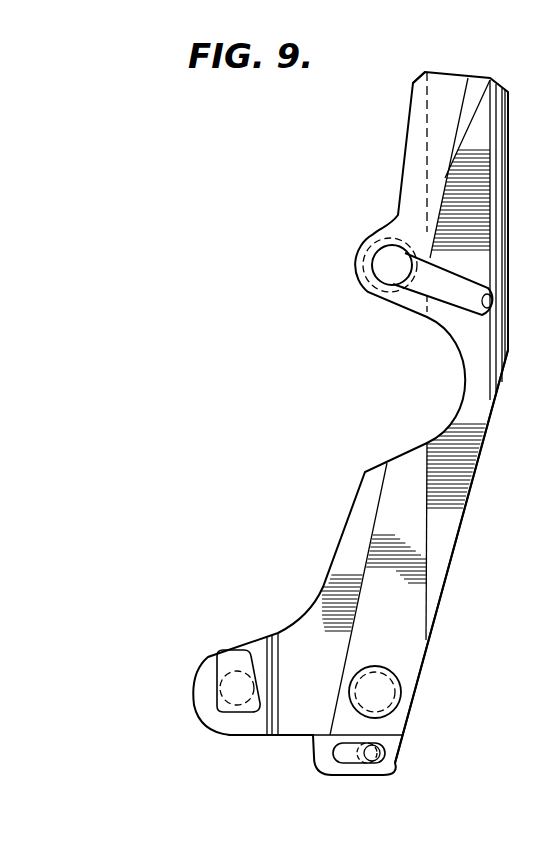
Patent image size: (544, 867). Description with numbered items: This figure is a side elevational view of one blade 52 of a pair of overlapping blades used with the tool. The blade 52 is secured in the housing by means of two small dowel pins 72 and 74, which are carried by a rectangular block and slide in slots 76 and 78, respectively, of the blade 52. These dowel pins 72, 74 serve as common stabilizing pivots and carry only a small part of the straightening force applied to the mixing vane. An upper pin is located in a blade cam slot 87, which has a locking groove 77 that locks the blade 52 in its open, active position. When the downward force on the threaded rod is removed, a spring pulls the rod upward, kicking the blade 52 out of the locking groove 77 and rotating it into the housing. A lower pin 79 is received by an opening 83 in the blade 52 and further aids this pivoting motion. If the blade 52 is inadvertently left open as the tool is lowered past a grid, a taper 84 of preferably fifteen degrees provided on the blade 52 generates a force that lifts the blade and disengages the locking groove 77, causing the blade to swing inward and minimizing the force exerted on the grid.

The blade 52 is at (477, 418).
The taper 84 is at (452, 563).
The locking groove 77 is at (382, 267).
The blade cam slot 87 is at (492, 301).
The slot 78 is at (228, 652).
The dowel pin 74 is at (224, 692).
The slot 76 is at (395, 708).
The dowel pin 72 is at (397, 687).
The opening 83 is at (337, 748).
The lower pin 79 is at (365, 758).